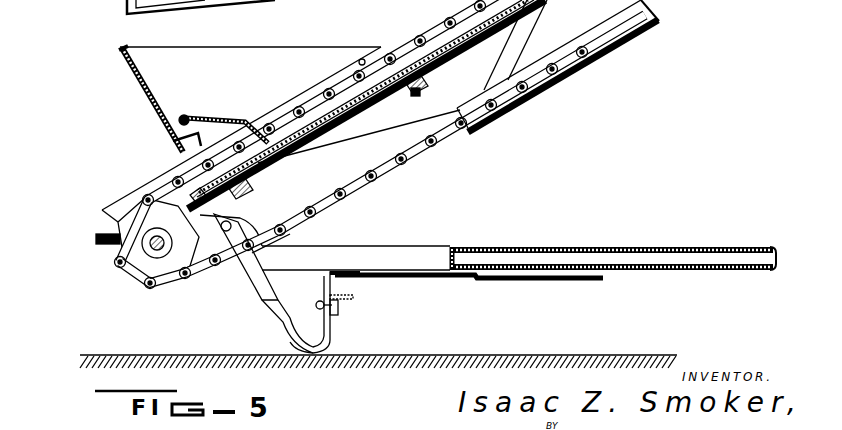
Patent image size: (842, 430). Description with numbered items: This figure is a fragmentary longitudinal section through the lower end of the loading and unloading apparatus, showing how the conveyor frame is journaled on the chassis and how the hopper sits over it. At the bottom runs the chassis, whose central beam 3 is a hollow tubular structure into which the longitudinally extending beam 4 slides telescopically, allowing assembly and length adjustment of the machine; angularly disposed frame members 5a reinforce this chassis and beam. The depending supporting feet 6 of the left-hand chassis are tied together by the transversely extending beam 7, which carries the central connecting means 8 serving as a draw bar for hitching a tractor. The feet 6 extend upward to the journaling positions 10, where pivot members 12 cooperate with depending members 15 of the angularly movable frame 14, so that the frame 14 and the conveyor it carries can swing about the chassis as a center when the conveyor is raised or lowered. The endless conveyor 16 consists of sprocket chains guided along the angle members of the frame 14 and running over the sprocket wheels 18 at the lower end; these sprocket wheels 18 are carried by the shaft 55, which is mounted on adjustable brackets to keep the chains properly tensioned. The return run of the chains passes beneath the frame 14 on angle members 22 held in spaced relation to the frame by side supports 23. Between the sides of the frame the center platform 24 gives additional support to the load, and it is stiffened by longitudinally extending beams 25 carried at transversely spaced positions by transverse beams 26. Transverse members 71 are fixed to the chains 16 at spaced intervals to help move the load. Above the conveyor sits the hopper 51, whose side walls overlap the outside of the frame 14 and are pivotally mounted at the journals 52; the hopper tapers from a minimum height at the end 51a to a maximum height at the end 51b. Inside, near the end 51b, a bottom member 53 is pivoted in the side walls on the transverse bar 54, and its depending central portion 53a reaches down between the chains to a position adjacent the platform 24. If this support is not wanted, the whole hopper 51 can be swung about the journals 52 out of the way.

The central beam 3 is at (398, 263).
The longitudinally extending beam 4 is at (648, 247).
The angularly disposed frame members 5a is at (508, 280).
The supporting feet 6 is at (283, 355).
The transversely extending beam 7 is at (345, 305).
The central connecting means 8 is at (280, 313).
The journaling positions 10 is at (290, 232).
The pivot members 12 is at (248, 188).
The angularly movable frame 14 is at (431, 9).
The depending members 15 is at (155, 190).
The endless conveyor 16 is at (392, 172).
The sprocket wheels 18 is at (168, 262).
The angle members 22 is at (622, 36).
The side supports 23 is at (343, 152).
The center platform 24 is at (363, 99).
The longitudinally extending beams 25 is at (530, 45).
The transverse beams 26 is at (420, 78).
The hopper 51 is at (163, 72).
The minimum height end 51a is at (340, 78).
The maximum height end 51b is at (143, 50).
The journals 52 is at (364, 57).
The bottom member 53 is at (210, 137).
The depending central portion 53a is at (262, 114).
The transverse bar 54 is at (173, 128).
The shaft 55 is at (130, 272).
The transverse members 71 is at (90, 244).